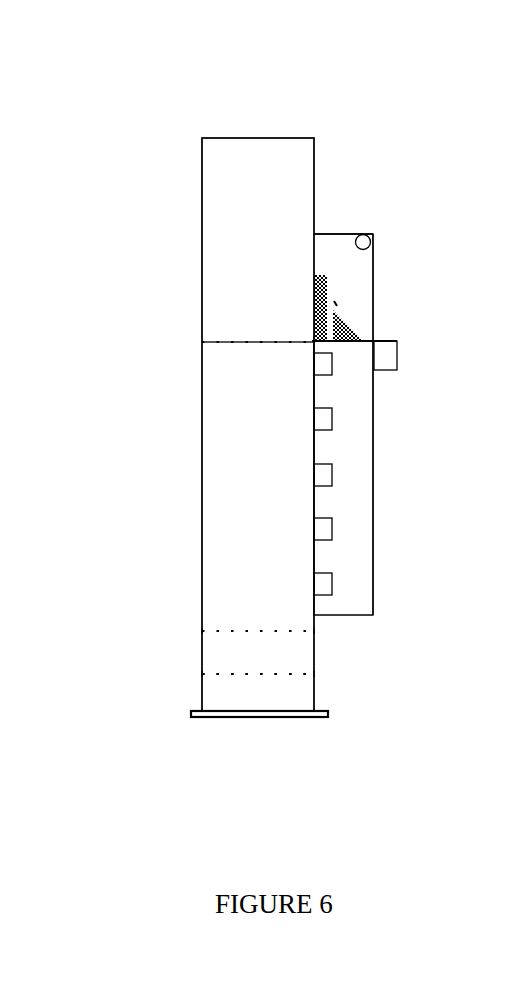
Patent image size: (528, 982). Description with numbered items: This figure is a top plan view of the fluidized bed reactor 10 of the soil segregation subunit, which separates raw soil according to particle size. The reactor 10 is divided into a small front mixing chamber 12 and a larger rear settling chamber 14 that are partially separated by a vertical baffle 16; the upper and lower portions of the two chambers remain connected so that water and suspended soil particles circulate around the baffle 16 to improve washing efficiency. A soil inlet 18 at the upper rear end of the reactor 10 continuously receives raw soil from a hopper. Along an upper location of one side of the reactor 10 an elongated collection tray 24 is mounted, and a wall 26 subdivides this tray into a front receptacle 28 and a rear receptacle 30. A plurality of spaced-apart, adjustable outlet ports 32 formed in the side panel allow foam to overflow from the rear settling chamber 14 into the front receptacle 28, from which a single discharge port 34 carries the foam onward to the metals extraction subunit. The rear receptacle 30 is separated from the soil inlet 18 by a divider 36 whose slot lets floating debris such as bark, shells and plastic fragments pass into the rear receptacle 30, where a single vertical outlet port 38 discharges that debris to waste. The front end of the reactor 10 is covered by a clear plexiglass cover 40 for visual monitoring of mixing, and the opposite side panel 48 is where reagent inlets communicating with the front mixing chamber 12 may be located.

The fluidized bed reactor 10 is at (152, 166).
The front mixing chamber 12 is at (232, 683).
The rear settling chamber 14 is at (272, 576).
The vertical baffle 16 is at (315, 674).
The soil inlet 18 is at (270, 254).
The collection tray 24 is at (357, 505).
The wall 26 is at (375, 341).
The front receptacle 28 is at (365, 442).
The rear receptacle 30 is at (350, 297).
The adjustable outlet ports 32 is at (318, 582).
The discharge port 34 is at (386, 352).
The divider 36 is at (313, 245).
The vertical outlet port 38 is at (373, 234).
The clear plexiglass cover 40 is at (253, 718).
The side panel 48 is at (201, 367).